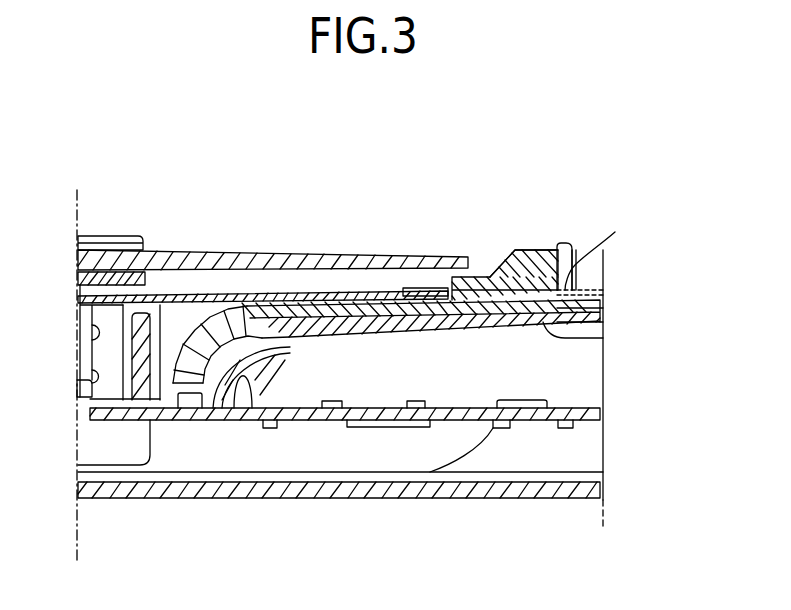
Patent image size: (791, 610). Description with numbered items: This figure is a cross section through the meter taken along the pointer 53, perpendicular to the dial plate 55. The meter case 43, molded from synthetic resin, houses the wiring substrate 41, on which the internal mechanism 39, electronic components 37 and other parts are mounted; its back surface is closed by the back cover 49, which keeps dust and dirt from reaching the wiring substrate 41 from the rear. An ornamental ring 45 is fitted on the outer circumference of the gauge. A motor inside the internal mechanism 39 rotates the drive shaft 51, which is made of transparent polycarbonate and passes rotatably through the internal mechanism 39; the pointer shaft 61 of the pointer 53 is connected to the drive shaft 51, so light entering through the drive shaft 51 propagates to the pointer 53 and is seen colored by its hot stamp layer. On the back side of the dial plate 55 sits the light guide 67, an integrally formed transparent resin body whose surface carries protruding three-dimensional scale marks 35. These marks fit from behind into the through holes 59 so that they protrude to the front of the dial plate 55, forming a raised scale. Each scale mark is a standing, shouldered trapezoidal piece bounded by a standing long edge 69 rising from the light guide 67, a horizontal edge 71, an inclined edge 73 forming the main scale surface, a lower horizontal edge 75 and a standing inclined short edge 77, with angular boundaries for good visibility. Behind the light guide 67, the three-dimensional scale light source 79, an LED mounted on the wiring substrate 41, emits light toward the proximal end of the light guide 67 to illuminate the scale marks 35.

The three-dimensional scale marks 35 is at (522, 238).
The electronic components 37 is at (420, 400).
The internal mechanism 39 is at (165, 443).
The wiring substrate 41 is at (603, 413).
The meter case 43 is at (603, 309).
The ornamental ring 45 is at (574, 245).
The back cover 49 is at (533, 503).
The drive shaft 51 is at (92, 388).
The pointer 53 is at (244, 250).
The dial plate 55 is at (346, 290).
The through holes 59 is at (593, 339).
The pointer shaft 61 is at (92, 330).
The light guide 67 is at (203, 316).
The standing long edge 69 is at (600, 250).
The horizontal edge 71 is at (535, 250).
The inclined edge 73 is at (498, 249).
The lower horizontal edge 75 is at (459, 277).
The standing inclined short edge 77 is at (420, 287).
The three-dimensional scale light source 79 is at (243, 367).